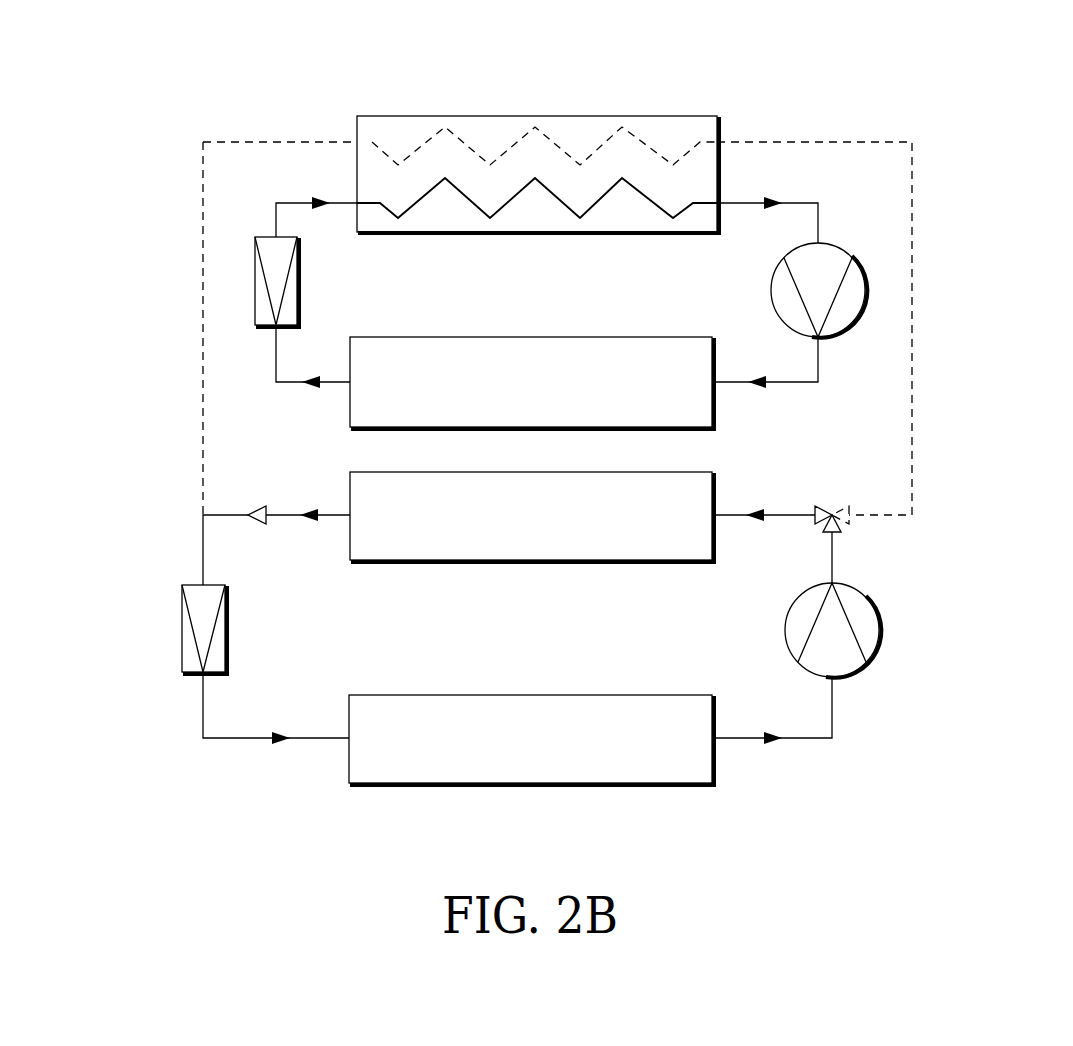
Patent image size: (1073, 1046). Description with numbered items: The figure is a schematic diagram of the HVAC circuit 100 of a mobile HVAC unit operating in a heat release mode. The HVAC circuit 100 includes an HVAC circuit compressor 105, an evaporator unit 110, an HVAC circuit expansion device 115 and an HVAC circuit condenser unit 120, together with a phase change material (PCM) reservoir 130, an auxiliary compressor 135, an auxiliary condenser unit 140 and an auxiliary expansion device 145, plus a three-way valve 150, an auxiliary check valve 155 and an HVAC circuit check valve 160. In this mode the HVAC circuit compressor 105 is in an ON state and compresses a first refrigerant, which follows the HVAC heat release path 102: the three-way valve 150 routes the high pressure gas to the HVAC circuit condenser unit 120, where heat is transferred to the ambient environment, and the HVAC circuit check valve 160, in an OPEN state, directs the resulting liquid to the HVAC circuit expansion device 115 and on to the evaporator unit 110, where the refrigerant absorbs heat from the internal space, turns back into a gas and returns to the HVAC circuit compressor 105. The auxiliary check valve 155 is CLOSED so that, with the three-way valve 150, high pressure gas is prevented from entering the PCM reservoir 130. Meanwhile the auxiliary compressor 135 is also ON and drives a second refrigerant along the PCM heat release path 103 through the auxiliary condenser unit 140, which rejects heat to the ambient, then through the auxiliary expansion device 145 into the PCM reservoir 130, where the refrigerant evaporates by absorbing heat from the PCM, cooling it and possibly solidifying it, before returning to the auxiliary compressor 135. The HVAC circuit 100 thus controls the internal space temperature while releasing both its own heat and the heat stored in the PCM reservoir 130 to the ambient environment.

The HVAC circuit 100 is at (958, 116).
The HVAC heat release path 102 is at (312, 522).
The PCM heat release path 103 is at (318, 200).
The HVAC circuit compressor 105 is at (862, 596).
The evaporator unit 110 is at (378, 695).
The HVAC circuit expansion device 115 is at (194, 585).
The HVAC circuit condenser unit 120 is at (368, 472).
The phase change material (PCM) reservoir 130 is at (372, 115).
The auxiliary compressor 135 is at (848, 260).
The auxiliary condenser unit 140 is at (368, 337).
The auxiliary expansion device 145 is at (264, 238).
The three-way valve 150 is at (846, 530).
The auxiliary check valve 155 is at (266, 157).
The HVAC circuit check valve 160 is at (266, 507).